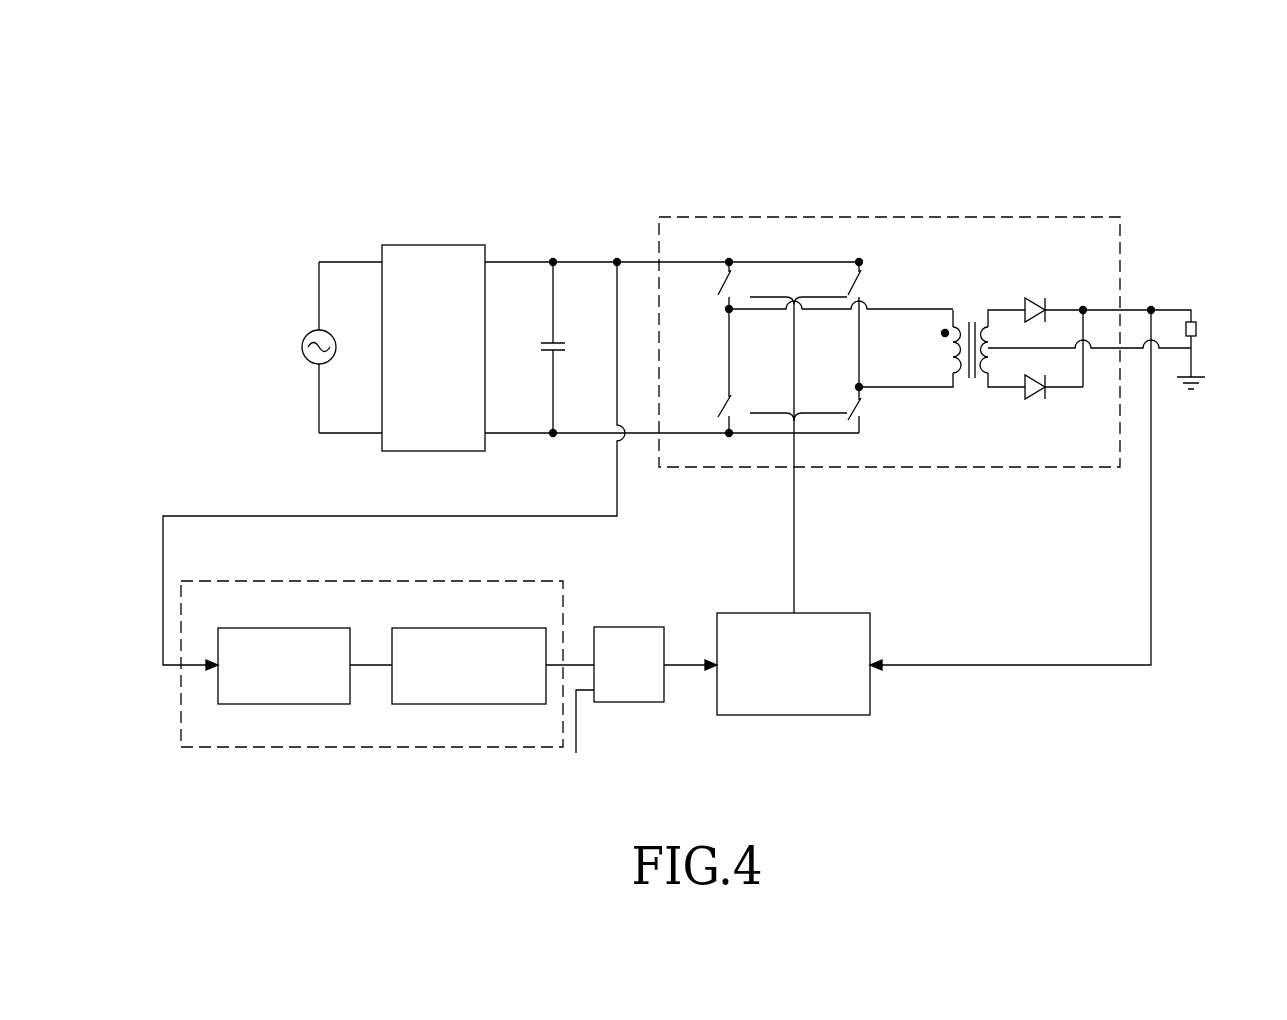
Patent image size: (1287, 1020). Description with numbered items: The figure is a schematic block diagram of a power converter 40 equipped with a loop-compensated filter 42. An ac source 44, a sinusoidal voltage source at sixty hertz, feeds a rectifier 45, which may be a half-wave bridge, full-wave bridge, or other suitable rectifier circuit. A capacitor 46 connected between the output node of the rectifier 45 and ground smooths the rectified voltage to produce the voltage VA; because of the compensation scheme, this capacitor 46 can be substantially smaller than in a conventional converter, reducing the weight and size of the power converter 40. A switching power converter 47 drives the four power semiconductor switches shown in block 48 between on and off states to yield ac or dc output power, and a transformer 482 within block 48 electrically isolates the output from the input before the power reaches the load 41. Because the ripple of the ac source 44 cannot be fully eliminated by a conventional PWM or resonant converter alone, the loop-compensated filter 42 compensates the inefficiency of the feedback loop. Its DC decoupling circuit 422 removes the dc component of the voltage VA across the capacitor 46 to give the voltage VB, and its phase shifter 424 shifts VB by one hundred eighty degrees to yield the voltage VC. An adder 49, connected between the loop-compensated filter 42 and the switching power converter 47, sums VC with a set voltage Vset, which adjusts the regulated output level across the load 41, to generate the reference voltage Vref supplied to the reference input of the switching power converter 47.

The power converter 40 is at (584, 168).
The load 41 is at (1200, 329).
The loop-compensated filter 42 is at (387, 707).
The DC decoupling circuit 422 is at (248, 628).
The 180° phase shifter 424 is at (420, 628).
The ac source 44 is at (304, 359).
The rectifier 45 is at (422, 245).
The capacitor 46 is at (541, 347).
The switching power converter 47 is at (830, 716).
The block 48 is at (775, 217).
The transformer 482 is at (973, 380).
The adder 49 is at (642, 703).